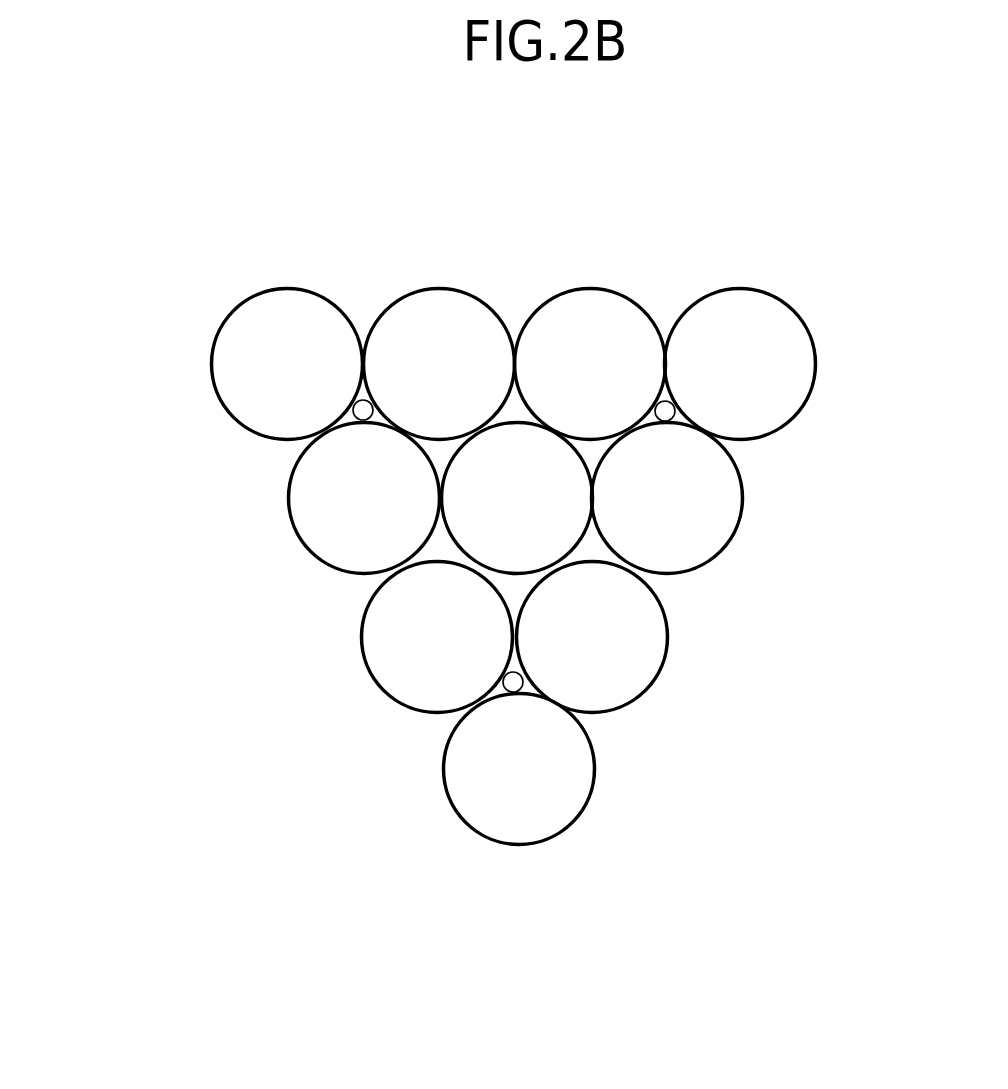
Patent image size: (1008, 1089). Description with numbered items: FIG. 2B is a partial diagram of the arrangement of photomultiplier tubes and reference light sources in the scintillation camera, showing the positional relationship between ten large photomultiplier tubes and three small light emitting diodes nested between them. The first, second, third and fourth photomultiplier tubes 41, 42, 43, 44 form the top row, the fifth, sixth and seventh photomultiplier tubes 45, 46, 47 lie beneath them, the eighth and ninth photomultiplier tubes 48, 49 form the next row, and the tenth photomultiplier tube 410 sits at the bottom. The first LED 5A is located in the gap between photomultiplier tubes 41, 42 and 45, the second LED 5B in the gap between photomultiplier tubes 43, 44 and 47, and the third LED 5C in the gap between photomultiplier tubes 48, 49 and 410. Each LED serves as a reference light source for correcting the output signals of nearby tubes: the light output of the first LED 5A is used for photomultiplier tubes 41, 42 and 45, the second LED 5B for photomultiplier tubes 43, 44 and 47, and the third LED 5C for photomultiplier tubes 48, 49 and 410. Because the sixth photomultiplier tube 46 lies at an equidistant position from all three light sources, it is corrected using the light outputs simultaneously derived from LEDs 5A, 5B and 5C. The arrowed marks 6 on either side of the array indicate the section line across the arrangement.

The first photomultiplier tube 41 is at (282, 307).
The second photomultiplier tube 42 is at (453, 305).
The third photomultiplier tube 43 is at (600, 307).
The fourth photomultiplier tube 44 is at (770, 308).
The fifth photomultiplier tube 45 is at (318, 522).
The sixth photomultiplier tube 46 is at (487, 538).
The seventh photomultiplier tube 47 is at (718, 535).
The eighth photomultiplier tube 48 is at (388, 683).
The ninth photomultiplier tube 49 is at (650, 643).
The tenth photomultiplier tube 410 is at (547, 822).
The first LED 5A is at (352, 410).
The second LED 5B is at (676, 410).
The third LED 5C is at (522, 685).
The section line 6- 6 is at (167, 502).